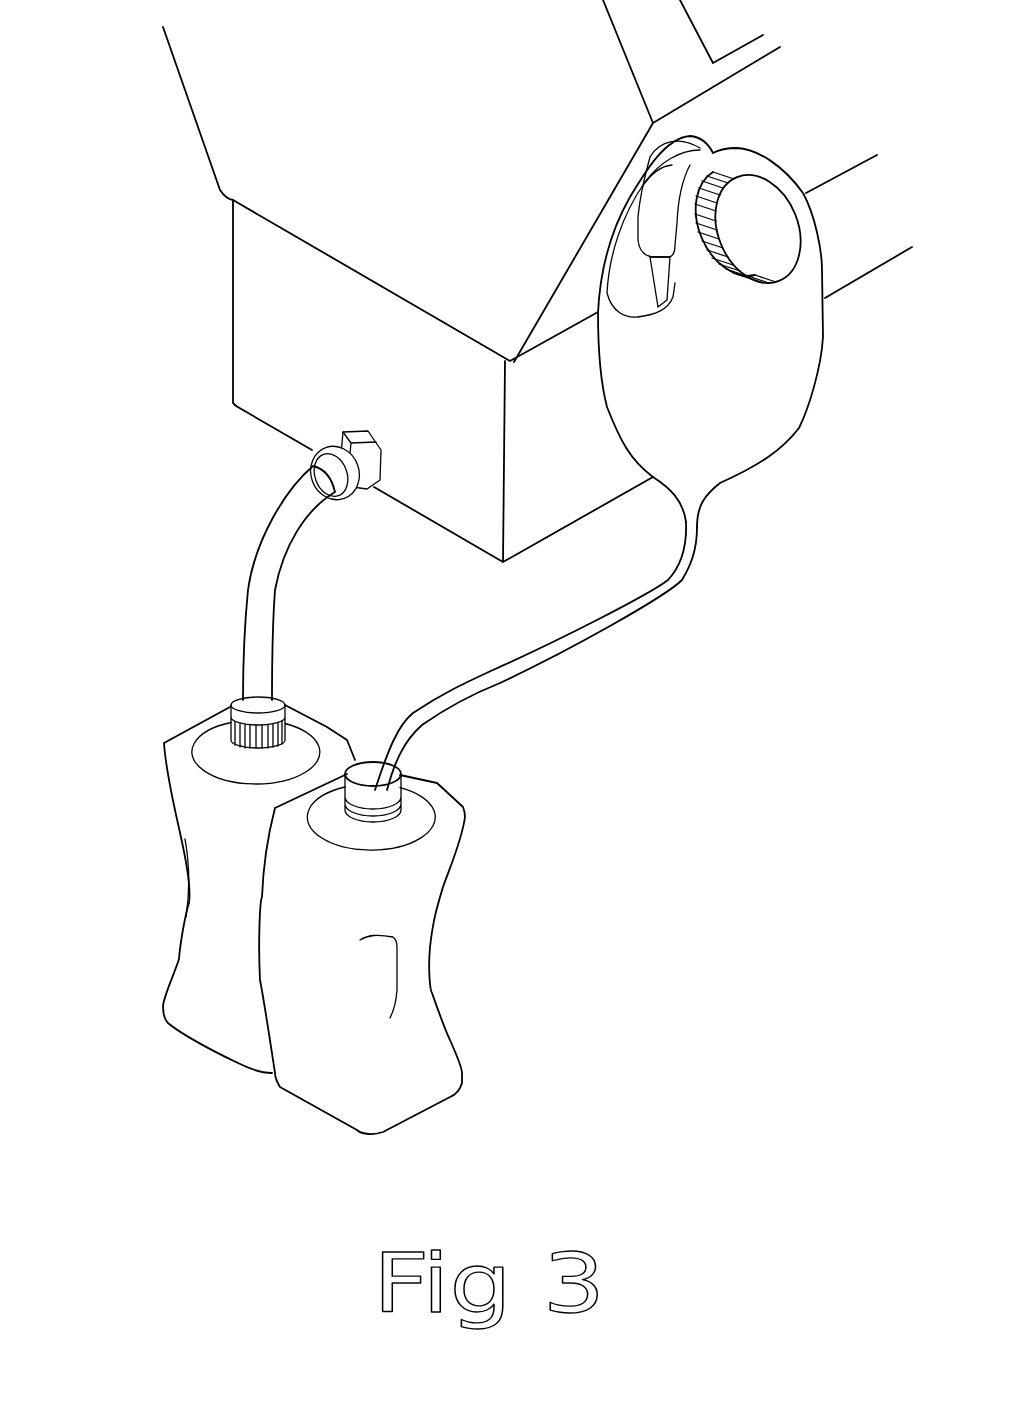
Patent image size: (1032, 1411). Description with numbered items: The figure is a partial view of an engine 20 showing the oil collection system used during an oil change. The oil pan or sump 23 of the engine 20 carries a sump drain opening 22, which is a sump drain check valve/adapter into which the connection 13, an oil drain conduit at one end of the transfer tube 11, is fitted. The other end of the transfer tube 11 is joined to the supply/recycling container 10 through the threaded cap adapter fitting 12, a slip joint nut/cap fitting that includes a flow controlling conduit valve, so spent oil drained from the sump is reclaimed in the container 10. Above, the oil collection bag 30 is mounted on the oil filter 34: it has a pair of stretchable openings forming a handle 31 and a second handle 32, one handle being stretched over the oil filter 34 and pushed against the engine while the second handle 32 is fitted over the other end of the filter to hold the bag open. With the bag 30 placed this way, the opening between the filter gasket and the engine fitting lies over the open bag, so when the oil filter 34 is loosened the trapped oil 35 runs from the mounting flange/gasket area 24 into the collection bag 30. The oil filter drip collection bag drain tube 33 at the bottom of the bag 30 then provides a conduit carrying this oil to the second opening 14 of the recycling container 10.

The supply/recycling container 10 is at (452, 1040).
The transfer tube 11 is at (278, 608).
The threaded cap adapter fitting 12 is at (227, 703).
The connection 13 is at (347, 503).
The second opening 14 is at (410, 768).
The engine 20 is at (193, 115).
The sump drain opening 22 is at (377, 447).
The oil pan or sump 23 is at (233, 312).
The mounting flange/gasket area 24 is at (637, 227).
The oil collection bag 30 is at (803, 410).
The handle 31 is at (662, 143).
The second handle 32 is at (790, 163).
The oil filter drip collection bag drain tube 33 is at (637, 617).
The oil filter 34 is at (713, 153).
The trapped oil 35 is at (653, 277).